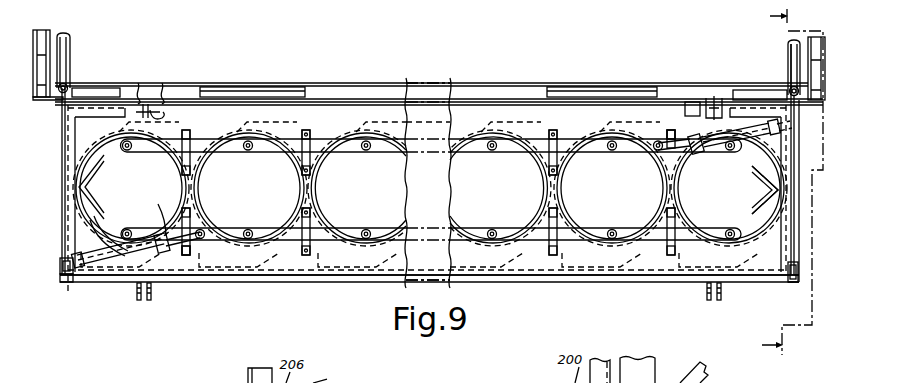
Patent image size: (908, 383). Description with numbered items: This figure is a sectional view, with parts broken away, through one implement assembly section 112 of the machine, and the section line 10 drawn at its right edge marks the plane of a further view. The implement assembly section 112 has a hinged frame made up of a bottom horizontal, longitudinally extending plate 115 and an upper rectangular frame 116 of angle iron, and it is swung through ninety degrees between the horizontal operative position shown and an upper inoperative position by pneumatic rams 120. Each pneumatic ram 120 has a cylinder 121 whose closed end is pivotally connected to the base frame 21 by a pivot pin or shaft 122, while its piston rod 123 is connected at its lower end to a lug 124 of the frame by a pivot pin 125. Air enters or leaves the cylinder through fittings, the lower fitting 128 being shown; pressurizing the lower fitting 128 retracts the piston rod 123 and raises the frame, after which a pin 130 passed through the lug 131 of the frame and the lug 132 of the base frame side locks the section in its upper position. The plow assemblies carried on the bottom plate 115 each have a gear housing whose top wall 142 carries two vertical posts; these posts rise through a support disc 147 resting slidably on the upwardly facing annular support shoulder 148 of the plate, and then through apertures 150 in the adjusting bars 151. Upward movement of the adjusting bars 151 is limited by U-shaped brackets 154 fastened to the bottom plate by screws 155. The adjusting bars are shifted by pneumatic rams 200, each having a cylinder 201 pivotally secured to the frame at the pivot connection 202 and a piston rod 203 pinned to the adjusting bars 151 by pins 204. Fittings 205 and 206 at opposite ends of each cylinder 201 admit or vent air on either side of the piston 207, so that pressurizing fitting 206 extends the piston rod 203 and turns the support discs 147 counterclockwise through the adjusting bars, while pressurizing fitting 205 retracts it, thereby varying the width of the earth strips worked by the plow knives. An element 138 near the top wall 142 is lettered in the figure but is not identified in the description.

The section line 10- 10 is at (792, 186).
The base frame 21 is at (650, 91).
The implement assembly section 112 is at (560, 285).
The bottom horizontal longitudinally extending plate 115 is at (180, 262).
The upper rectangular frame 116 is at (100, 277).
The pneumatic ram 120 is at (74, 42).
The cylinder 121 is at (789, 59).
The pivot pin or shaft 122 is at (772, 228).
The piston rod 123 is at (63, 176).
The lug 124 is at (62, 281).
The pivot pin 125 is at (62, 264).
The lower fitting 128 is at (67, 84).
The pin 130 is at (164, 116).
The lug 131 is at (139, 301).
The lug 132 is at (142, 95).
The ring 138 is at (729, 188).
The top wall 142 is at (764, 172).
The support disc 147 is at (407, 184).
The annular support shoulder 148 is at (536, 140).
The apertures 150 is at (255, 140).
The adjusting bars 151 is at (322, 145).
The U-shaped brackets 154 is at (302, 145).
The screws 155 is at (306, 257).
The pneumatic ram 200 is at (127, 274).
The cylinder 201 is at (137, 258).
The pivot connection 202 is at (68, 291).
The piston rod 203 is at (192, 255).
The pins 204 is at (203, 233).
The fitting 205 is at (160, 235).
The fitting 206 is at (728, 129).
The piston 207 is at (96, 223).